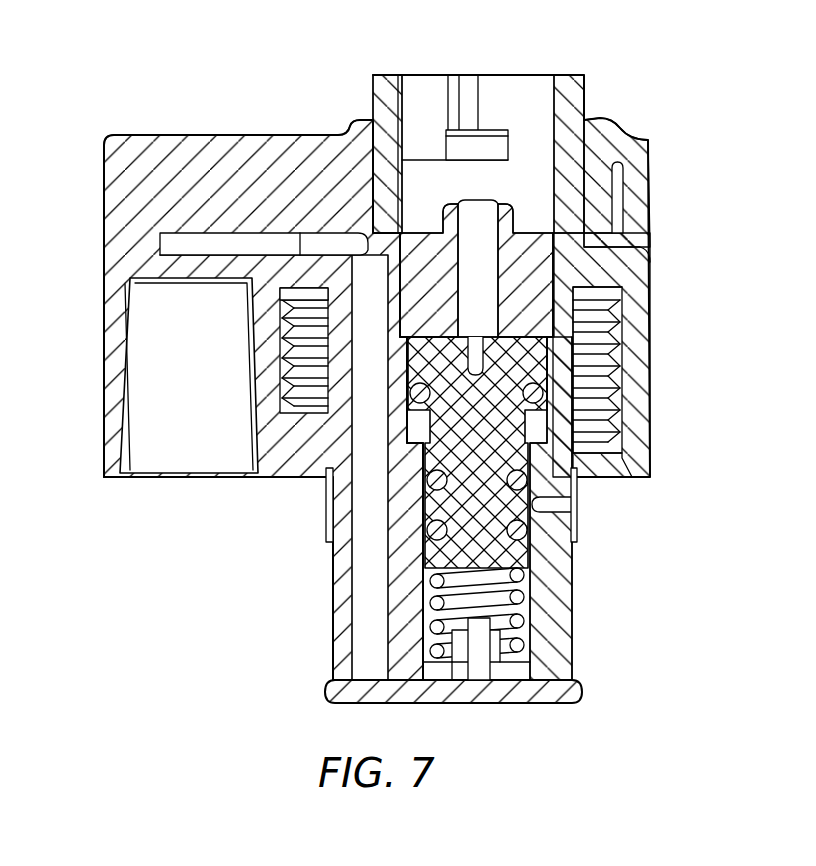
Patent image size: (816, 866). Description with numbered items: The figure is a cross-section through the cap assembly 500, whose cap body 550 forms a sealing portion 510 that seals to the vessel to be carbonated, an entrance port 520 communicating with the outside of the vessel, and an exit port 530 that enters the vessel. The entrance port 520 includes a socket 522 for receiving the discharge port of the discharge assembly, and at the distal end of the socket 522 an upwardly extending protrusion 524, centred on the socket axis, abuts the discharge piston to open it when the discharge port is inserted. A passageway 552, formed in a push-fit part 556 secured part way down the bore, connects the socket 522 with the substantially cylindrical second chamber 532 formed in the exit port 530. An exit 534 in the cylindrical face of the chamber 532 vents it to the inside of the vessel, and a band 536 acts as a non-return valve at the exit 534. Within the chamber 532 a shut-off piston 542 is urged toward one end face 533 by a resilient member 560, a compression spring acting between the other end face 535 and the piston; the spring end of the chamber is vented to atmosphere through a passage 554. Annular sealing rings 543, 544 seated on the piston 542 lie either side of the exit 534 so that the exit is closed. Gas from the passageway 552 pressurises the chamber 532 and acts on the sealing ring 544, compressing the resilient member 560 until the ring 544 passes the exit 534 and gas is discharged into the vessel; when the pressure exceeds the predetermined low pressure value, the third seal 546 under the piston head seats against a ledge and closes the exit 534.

The cap assembly 500 is at (143, 66).
The sealing portion 510 is at (290, 383).
The entrance port 520 is at (595, 92).
The socket 522 is at (500, 104).
The protrusion 524 is at (518, 214).
The exit port 530 is at (578, 622).
The second chamber 532 is at (545, 432).
The end face 533 is at (575, 302).
The exit 534 is at (572, 505).
The end face 535 is at (527, 668).
The band 536 is at (578, 522).
The shut-off piston 542 is at (495, 555).
The annular sealing ring 543 is at (430, 530).
The annular sealing ring 544 is at (430, 482).
The third seal 546 is at (600, 407).
The cap body 550 is at (120, 272).
The passageway 552 is at (486, 222).
The passage 554 is at (296, 300).
The push-fit part 556 is at (540, 245).
The resilient member 560 is at (522, 597).